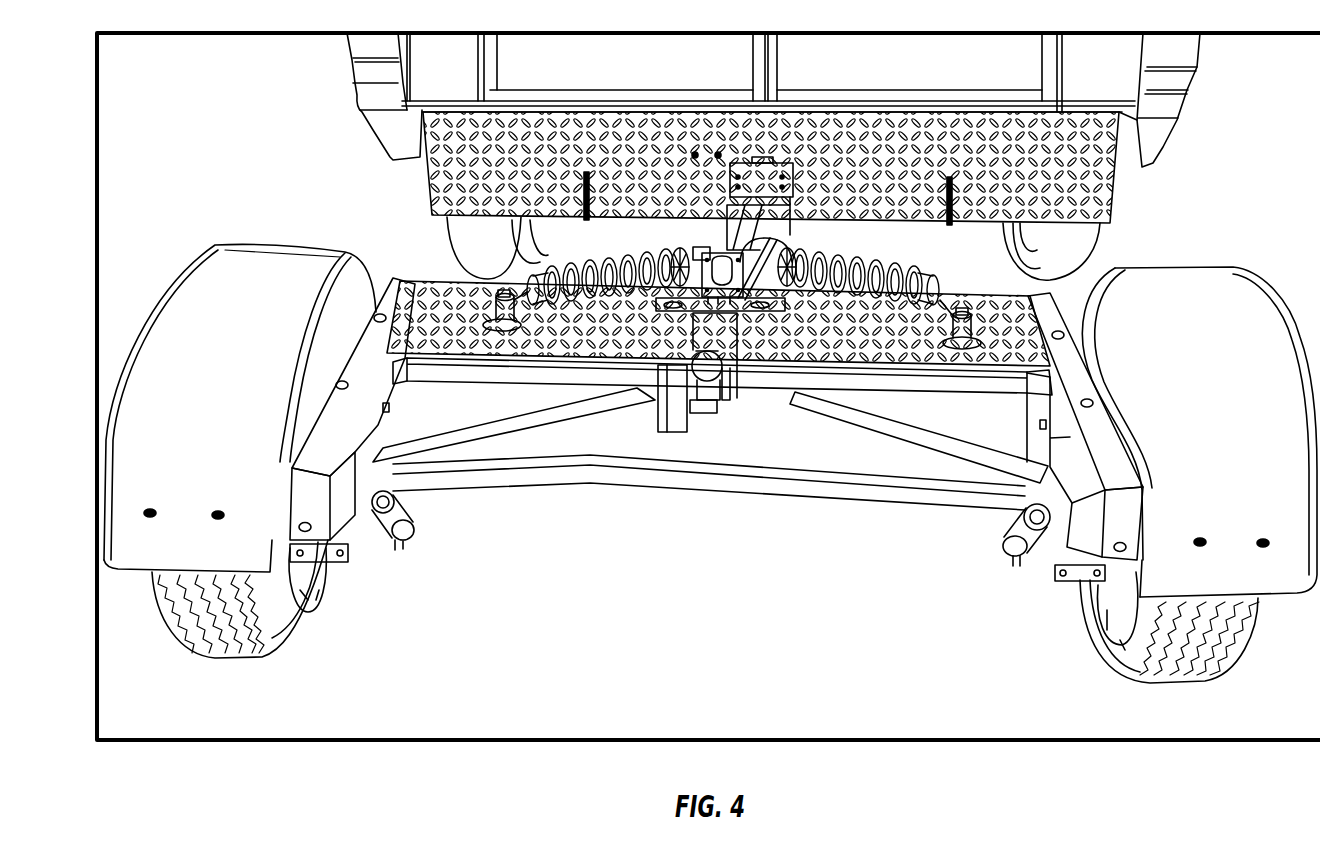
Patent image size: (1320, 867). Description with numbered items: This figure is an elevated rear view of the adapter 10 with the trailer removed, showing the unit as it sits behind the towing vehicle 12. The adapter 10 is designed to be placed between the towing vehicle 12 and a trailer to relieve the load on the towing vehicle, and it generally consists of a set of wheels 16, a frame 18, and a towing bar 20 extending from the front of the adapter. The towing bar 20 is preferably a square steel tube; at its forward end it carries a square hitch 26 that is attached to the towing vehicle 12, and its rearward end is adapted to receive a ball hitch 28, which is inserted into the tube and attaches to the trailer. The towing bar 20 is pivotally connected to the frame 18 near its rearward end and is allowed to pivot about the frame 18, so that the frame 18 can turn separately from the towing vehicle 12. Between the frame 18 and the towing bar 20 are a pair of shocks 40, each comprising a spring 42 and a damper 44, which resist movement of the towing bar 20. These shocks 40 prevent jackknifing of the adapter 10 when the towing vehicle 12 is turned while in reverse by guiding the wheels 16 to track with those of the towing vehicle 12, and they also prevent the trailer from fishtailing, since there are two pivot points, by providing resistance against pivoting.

The adapter 10 is at (228, 173).
The towing vehicle 12 is at (1153, 163).
The wheels 16 is at (223, 657).
The frame 18 is at (1021, 339).
The towing bar 20 is at (727, 243).
The square hitch 26 is at (760, 203).
The ball hitch 28 is at (710, 377).
The shocks 40 is at (597, 268).
The spring 42 is at (620, 316).
The damper 44 is at (522, 292).